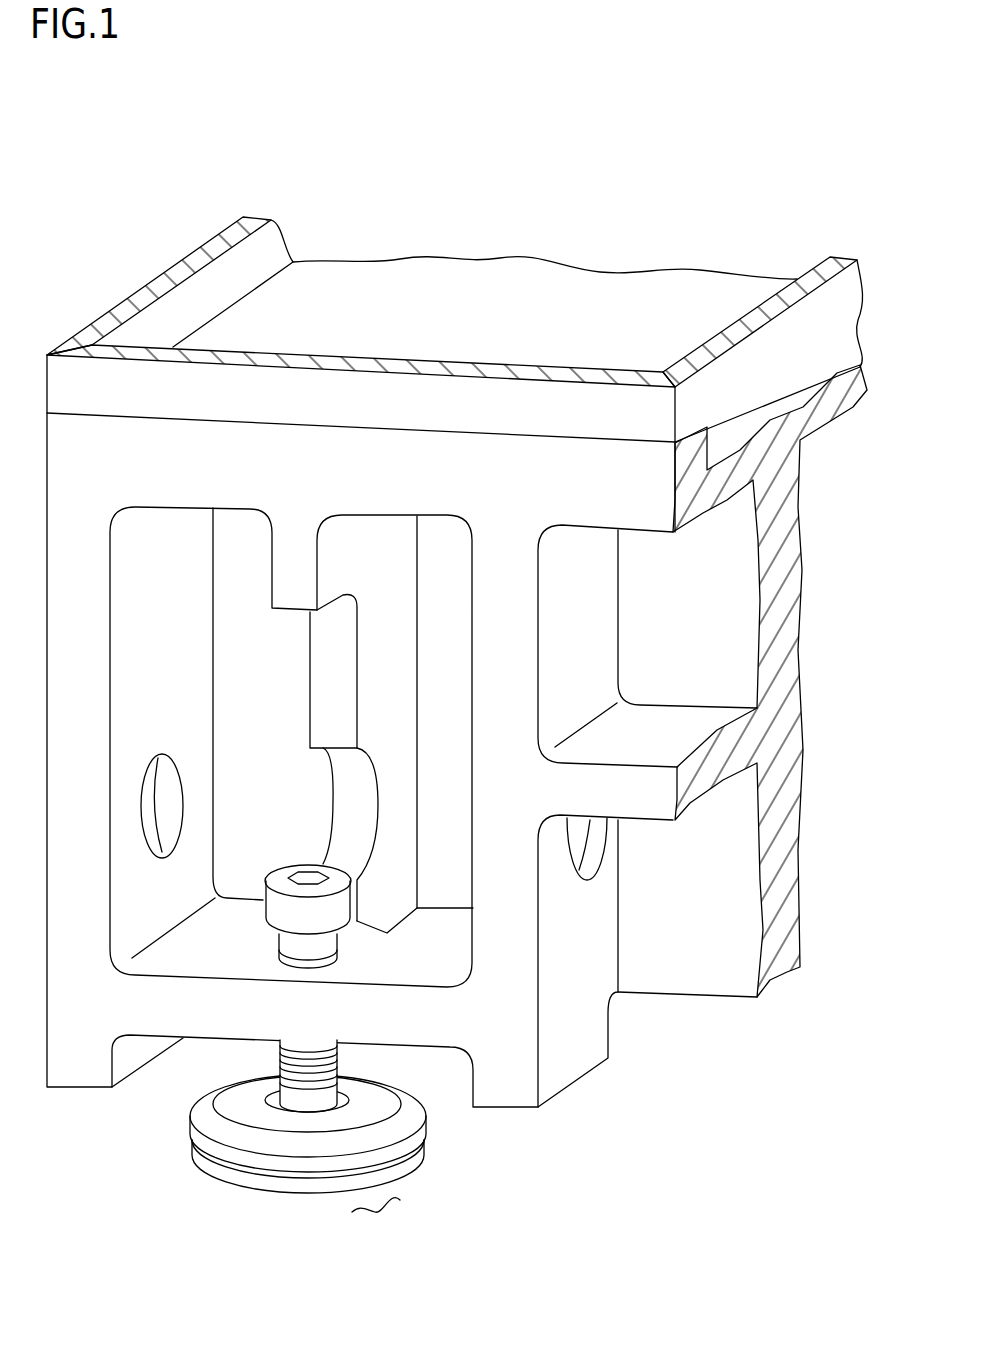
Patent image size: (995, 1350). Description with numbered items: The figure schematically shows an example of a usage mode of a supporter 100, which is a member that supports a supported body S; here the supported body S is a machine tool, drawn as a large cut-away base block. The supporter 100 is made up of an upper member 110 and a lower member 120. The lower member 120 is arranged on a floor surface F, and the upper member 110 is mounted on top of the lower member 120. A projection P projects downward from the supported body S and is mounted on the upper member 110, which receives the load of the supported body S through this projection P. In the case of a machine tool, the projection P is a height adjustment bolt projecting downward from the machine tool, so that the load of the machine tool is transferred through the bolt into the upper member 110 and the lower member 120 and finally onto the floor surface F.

The supported body S is at (520, 238).
The supporter 100 is at (297, 1133).
The upper member 110 is at (417, 1117).
The lower member 120 is at (413, 1167).
The projection P is at (280, 1050).
The floor surface F is at (400, 1200).